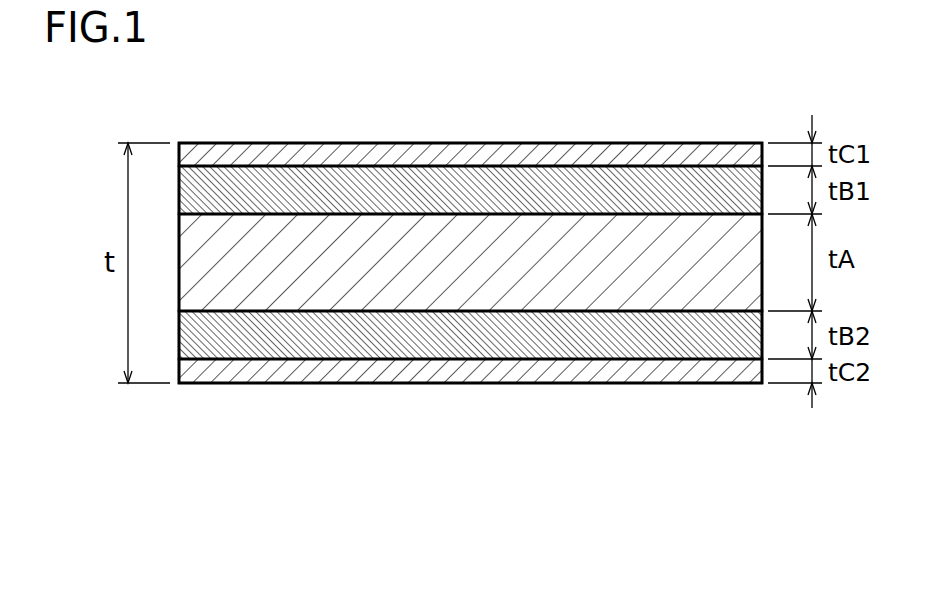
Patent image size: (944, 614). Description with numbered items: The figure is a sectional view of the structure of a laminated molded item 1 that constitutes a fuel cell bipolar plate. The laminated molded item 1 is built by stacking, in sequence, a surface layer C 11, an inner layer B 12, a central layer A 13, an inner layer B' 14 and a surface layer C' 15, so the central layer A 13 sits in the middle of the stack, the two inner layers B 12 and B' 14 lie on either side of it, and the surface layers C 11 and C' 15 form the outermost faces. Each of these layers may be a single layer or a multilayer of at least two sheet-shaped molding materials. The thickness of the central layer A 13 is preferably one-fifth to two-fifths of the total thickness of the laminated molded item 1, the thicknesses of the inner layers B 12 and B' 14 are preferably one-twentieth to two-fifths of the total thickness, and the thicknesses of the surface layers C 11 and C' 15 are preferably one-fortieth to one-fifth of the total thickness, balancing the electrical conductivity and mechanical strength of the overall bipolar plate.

The laminated molded item 1 is at (88, 60).
The surface layer C 11 is at (625, 150).
The inner layer B 12 is at (523, 190).
The central layer A 13 is at (417, 263).
The inner layer B' 14 is at (525, 333).
The surface layer C' 15 is at (627, 370).